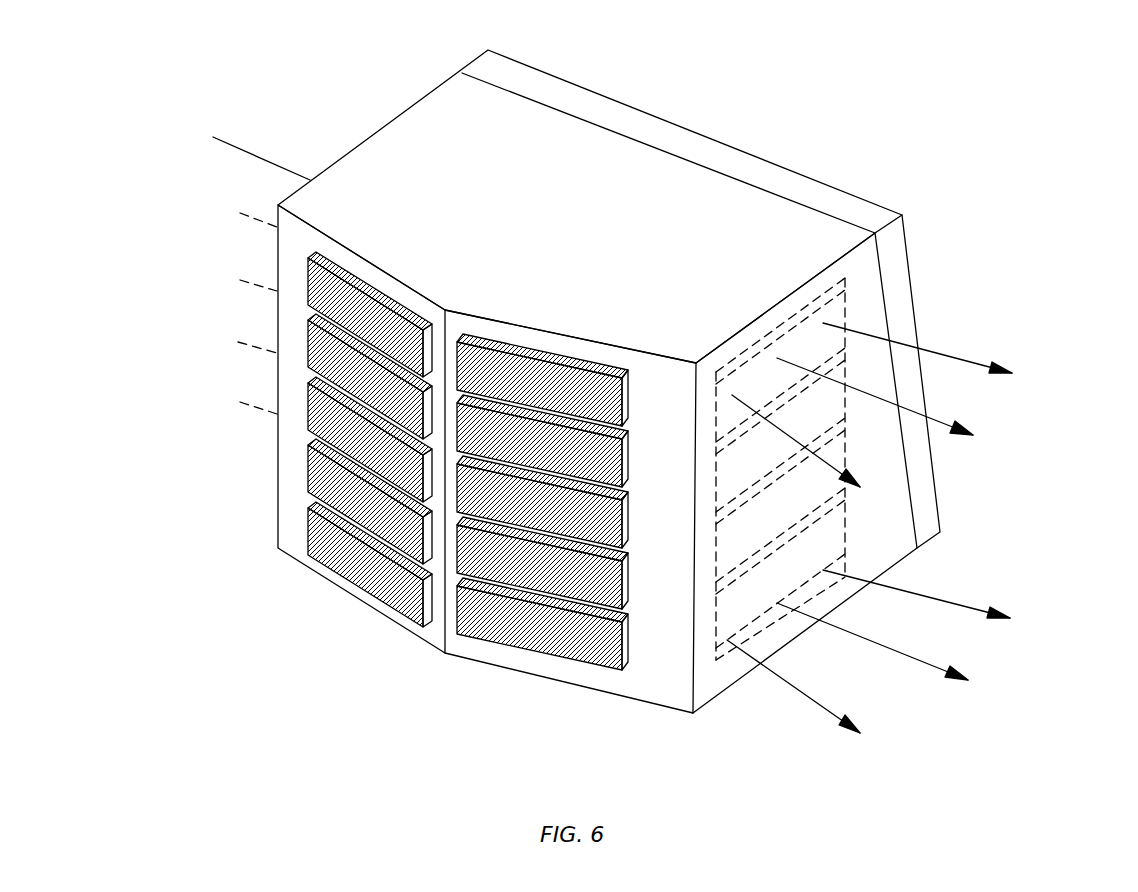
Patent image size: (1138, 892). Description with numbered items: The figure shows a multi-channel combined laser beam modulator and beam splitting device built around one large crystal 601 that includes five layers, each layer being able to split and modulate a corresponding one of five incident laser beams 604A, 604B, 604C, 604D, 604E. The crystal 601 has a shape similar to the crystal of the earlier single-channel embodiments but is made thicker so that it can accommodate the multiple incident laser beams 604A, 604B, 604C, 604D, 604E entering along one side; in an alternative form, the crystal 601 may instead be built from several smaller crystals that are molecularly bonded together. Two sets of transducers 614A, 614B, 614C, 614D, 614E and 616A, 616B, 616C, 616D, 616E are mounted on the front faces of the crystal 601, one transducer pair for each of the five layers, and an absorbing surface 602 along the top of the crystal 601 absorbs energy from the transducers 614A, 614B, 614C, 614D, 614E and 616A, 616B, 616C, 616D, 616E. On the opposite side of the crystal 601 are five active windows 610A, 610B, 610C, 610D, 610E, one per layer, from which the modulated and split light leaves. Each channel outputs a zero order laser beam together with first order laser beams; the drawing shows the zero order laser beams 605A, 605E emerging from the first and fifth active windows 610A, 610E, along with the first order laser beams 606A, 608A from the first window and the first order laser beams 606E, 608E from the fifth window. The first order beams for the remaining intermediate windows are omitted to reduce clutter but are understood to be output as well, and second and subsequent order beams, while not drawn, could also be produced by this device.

The crystal 601 is at (408, 138).
The absorbing surface 602 is at (707, 158).
The incident laser beam 604A is at (237, 140).
The incident laser beam 604B is at (232, 208).
The incident laser beam 604C is at (232, 275).
The incident laser beam 604D is at (225, 327).
The incident laser beam 604E is at (232, 392).
The zero order laser beam 605A is at (873, 393).
The zero order laser beam 605E is at (870, 637).
The first order laser beam 606A is at (838, 445).
The first order laser beam 606E is at (835, 690).
The first order laser beam 608A is at (937, 353).
The first order laser beam 608E is at (923, 597).
The active window 610A is at (846, 327).
The active window 610B is at (730, 447).
The active window 610C is at (730, 512).
The active window 610D is at (823, 510).
The active window 610E is at (727, 648).
The transducer 614A is at (353, 297).
The transducer 614B is at (400, 400).
The transducer 614C is at (327, 420).
The transducer 614D is at (327, 480).
The transducer 614E is at (362, 575).
The transducer 616A is at (517, 370).
The transducer 616B is at (580, 457).
The transducer 616C is at (635, 590).
The transducer 616D is at (578, 600).
The transducer 616E is at (505, 630).